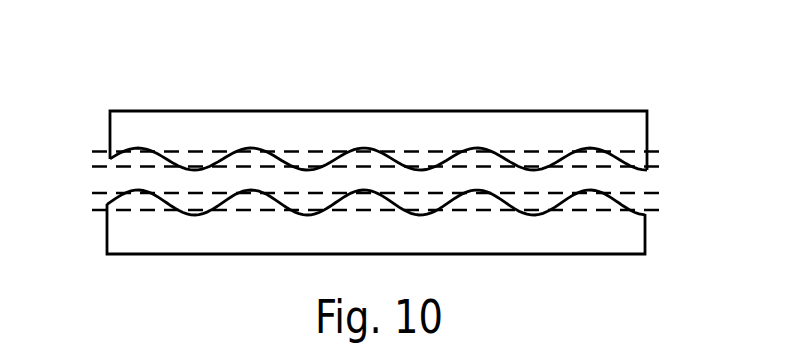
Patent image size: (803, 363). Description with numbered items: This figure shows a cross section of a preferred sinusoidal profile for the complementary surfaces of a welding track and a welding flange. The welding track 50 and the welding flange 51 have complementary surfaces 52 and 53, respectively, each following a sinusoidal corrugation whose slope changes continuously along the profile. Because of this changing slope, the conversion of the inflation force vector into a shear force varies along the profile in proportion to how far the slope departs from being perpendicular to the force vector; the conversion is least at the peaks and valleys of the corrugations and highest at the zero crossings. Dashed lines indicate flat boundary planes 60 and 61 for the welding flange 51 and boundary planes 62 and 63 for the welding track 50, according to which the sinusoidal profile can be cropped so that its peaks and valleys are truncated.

The welding track 50 is at (208, 238).
The welding flange 51 is at (201, 132).
The complementary surface 52 is at (140, 190).
The complementary surface 53 is at (172, 157).
The flat boundary plane 60 is at (662, 150).
The flat boundary plane 61 is at (657, 166).
The boundary plane 62 is at (660, 194).
The boundary plane 63 is at (657, 213).